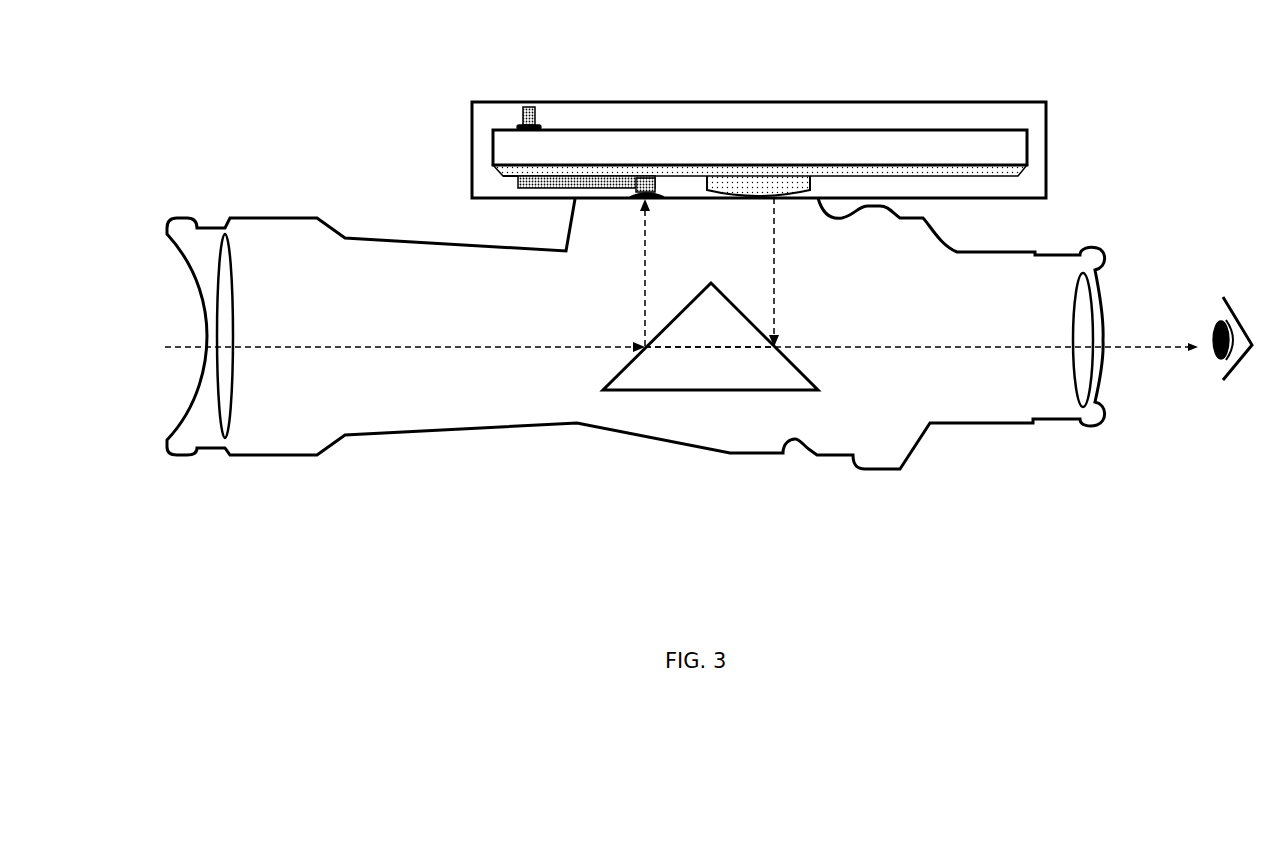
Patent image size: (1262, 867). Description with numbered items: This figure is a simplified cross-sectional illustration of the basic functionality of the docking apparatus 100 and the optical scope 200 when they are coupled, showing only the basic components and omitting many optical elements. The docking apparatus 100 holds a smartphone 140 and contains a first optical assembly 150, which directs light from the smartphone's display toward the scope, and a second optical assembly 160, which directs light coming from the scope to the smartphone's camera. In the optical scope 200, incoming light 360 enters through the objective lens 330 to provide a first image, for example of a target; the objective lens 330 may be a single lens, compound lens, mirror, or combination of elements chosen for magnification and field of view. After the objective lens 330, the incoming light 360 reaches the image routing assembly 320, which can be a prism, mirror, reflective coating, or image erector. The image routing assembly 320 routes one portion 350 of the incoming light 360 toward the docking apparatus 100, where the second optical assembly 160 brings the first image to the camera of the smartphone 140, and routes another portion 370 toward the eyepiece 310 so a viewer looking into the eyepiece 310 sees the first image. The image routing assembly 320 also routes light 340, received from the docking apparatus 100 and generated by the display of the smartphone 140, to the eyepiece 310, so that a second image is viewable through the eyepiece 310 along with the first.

The docking apparatus 100 is at (1006, 92).
The smartphone 140 is at (778, 157).
The first optical assembly 150 is at (928, 168).
The second optical assembly 160 is at (518, 188).
The optical scope 200 is at (1055, 238).
The eyepiece 310 is at (1100, 375).
The image routing assembly 320 is at (684, 385).
The objective lens 330 is at (226, 413).
The light received via the scope interface 340 is at (776, 244).
The portion of incoming light routed to the scope interface 350 is at (648, 244).
The incoming light 360 is at (460, 347).
The portion of incoming light routed to the eyepiece 370 is at (688, 348).